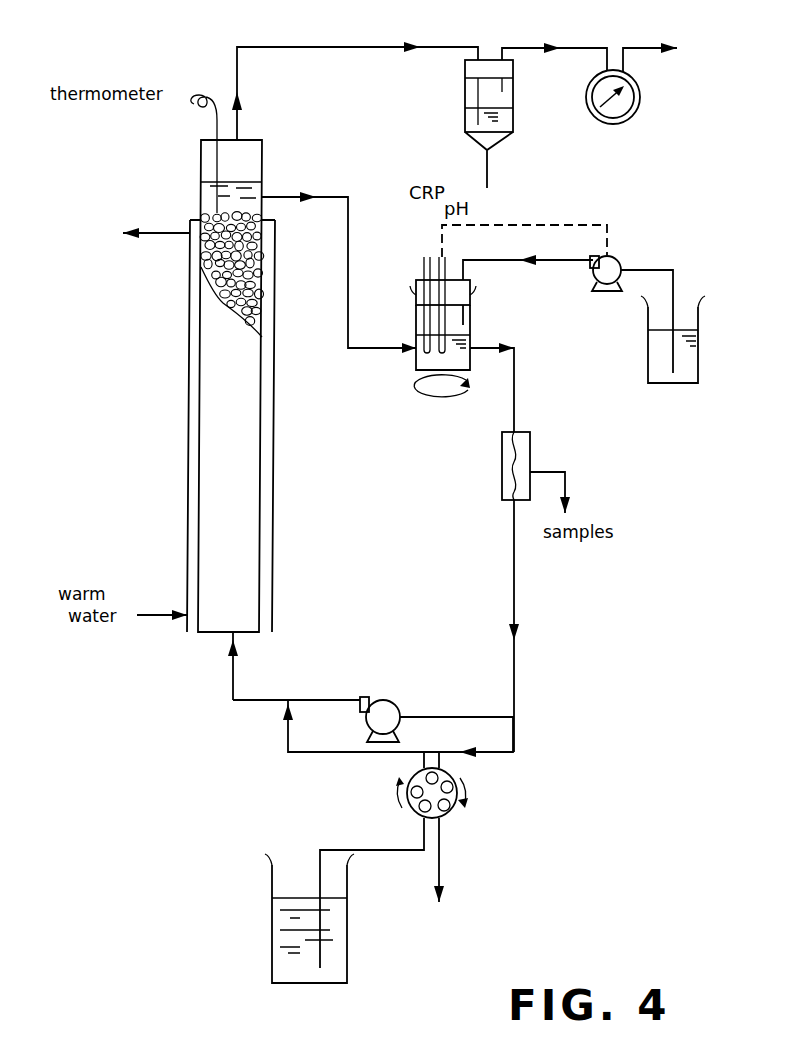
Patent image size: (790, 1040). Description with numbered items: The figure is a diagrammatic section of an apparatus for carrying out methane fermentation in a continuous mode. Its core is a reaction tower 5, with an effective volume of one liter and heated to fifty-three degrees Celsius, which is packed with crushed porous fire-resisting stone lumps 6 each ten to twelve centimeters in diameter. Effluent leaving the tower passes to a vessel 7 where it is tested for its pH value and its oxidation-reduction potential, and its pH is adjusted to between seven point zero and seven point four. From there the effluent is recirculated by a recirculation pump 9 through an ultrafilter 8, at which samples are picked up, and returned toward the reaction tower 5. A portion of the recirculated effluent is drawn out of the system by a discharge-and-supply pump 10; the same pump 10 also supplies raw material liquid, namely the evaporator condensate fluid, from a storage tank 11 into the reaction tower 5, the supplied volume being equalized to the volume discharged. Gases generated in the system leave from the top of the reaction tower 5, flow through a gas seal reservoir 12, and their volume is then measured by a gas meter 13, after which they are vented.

The reaction tower 5 is at (213, 373).
The crushed porous fire-resisting stone lumps 6 is at (262, 288).
The reaction vessel 7 is at (416, 318).
The ultrafilter 8 is at (502, 447).
The recirculation pump 9 is at (383, 700).
The discharge-and-supply pump 10 is at (455, 810).
The storage tank 11 is at (272, 930).
The gas seal reservoir 12 is at (465, 120).
The gas meter 13 is at (640, 97).